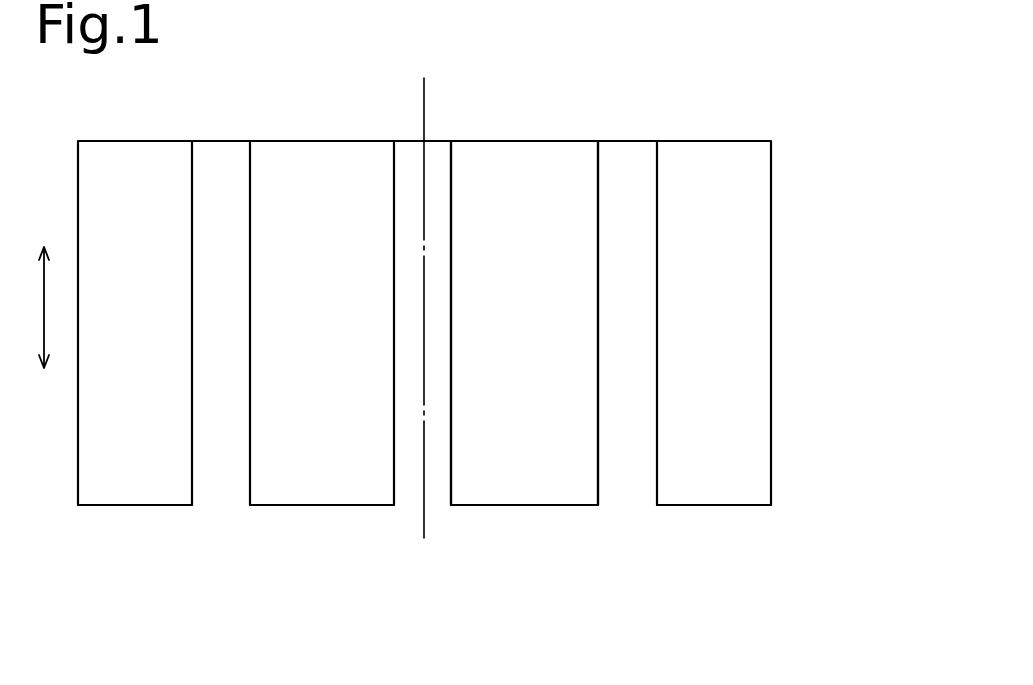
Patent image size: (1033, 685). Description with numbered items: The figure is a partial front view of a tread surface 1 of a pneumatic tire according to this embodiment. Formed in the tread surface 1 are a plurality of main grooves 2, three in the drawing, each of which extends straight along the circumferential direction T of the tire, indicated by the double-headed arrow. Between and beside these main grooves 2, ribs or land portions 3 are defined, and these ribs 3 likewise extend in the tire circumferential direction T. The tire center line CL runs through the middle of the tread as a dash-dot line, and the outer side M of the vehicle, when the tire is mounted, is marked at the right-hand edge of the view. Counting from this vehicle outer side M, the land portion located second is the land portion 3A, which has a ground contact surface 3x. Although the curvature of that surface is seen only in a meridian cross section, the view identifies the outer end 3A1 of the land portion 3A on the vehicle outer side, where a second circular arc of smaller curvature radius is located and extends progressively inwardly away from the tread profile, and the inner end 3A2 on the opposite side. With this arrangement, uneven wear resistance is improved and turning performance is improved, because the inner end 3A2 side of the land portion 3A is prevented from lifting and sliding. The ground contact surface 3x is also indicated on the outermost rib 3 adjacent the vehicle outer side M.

The tread surface 1 is at (492, 140).
The main grooves 2 is at (230, 155).
The ribs (land portions) 3 is at (703, 137).
The land portion 3A is at (557, 504).
The outer end of land portion 3A1 is at (585, 480).
The inner end of land portion 3A2 is at (475, 490).
The ground contact surface 3x is at (517, 462).
The tire center line CL is at (420, 291).
The tire circumferential direction T is at (35, 307).
The outer side of vehicle M is at (815, 324).